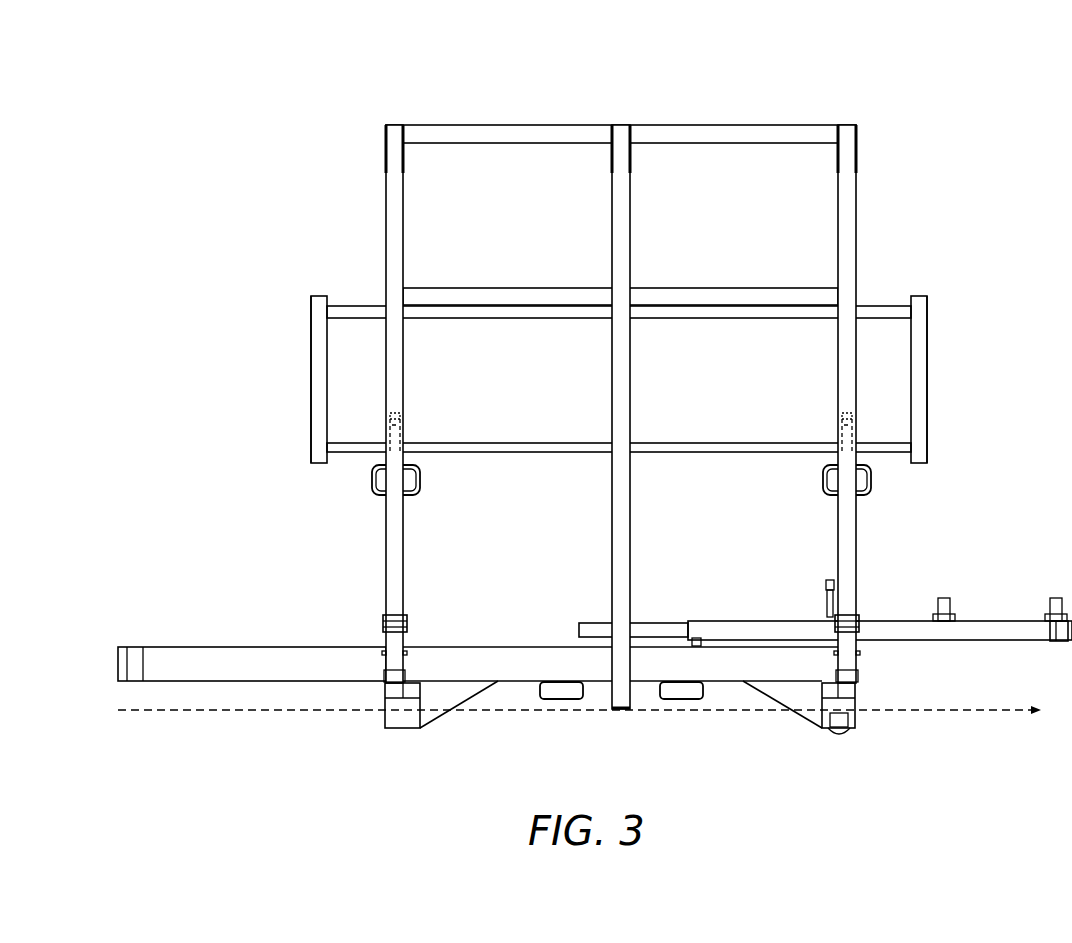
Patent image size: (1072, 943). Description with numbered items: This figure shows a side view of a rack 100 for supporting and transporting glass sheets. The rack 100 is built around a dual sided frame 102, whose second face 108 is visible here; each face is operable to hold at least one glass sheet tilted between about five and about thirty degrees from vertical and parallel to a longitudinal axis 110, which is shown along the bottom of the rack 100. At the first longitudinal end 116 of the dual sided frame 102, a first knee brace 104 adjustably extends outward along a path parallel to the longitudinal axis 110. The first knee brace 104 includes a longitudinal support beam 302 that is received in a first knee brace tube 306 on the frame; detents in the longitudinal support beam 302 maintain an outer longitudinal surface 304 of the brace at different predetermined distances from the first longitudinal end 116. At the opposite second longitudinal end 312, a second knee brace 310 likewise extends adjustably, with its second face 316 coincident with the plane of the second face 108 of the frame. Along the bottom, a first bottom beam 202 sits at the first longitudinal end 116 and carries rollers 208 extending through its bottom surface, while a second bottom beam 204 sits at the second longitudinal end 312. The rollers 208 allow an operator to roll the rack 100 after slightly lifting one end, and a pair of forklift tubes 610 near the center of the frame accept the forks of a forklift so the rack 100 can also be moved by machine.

The rack 100 is at (976, 109).
The dual sided frame 102 is at (767, 125).
The first knee brace 104 is at (920, 296).
The second face 108 is at (620, 183).
The longitudinal axis 110 is at (162, 710).
The first longitudinal end 116 is at (860, 572).
The first bottom beam 202 is at (802, 718).
The second bottom beam 204 is at (400, 728).
The rollers 208 is at (840, 735).
The longitudinal support beam 302 is at (886, 455).
The outer longitudinal surface 304 is at (931, 403).
The first knee brace tube 306 is at (845, 410).
The second knee brace 310 is at (320, 296).
The second longitudinal end 312 is at (381, 558).
The second face of second knee brace 316 is at (318, 388).
The forklift tubes 610 is at (561, 690).